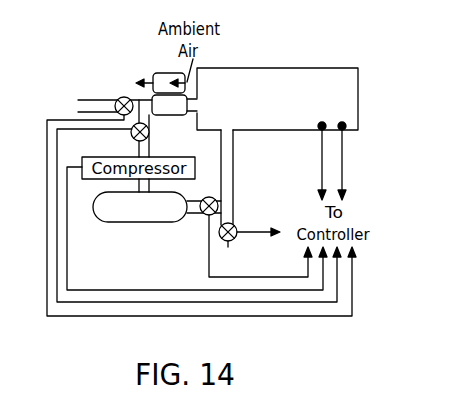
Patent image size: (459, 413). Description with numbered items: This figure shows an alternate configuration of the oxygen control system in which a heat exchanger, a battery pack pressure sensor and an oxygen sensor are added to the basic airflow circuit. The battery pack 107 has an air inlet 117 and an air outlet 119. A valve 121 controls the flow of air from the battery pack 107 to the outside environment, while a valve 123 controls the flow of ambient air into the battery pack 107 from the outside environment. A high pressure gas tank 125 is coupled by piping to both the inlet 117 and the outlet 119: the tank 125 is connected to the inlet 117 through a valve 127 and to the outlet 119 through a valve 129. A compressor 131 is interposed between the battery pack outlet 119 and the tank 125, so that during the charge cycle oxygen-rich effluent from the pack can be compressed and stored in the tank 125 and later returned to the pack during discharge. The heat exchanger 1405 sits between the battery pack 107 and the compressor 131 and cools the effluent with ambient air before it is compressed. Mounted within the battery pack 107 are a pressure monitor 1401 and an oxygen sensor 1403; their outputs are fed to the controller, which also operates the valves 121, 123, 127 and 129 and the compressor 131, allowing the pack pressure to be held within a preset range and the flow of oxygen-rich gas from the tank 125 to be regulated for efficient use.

The battery pack 107 is at (292, 66).
The air inlet 117 is at (241, 130).
The air outlet 119 is at (208, 96).
The valve 121 is at (115, 100).
The valve 123 is at (239, 226).
The high pressure gas tank 125 is at (140, 224).
The valve 127 is at (206, 221).
The valve 129 is at (151, 136).
The compressor 131 is at (158, 151).
The pressure monitor 1401 is at (342, 122).
The oxygen sensor 1403 is at (322, 122).
The heat exchanger 1405 is at (158, 73).